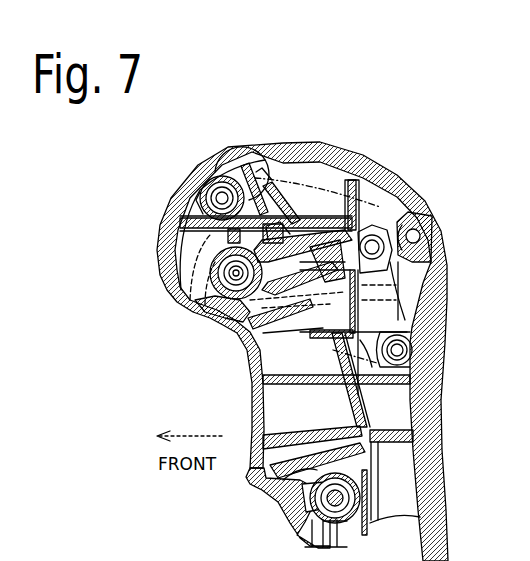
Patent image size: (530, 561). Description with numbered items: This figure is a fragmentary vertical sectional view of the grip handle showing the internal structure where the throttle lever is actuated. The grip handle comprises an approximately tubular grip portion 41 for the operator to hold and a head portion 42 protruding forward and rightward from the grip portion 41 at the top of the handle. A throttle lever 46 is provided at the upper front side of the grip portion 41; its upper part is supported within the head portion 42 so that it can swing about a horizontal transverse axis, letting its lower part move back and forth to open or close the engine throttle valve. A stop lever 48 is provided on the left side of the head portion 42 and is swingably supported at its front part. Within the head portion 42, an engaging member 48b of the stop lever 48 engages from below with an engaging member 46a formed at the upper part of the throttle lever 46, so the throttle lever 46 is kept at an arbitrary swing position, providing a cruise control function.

The grip portion 41 is at (283, 516).
The head portion 42 is at (190, 197).
The throttle lever 46 is at (253, 413).
The engaging member 46a is at (302, 227).
The stop lever 48 is at (172, 231).
The engaging member 48b is at (357, 190).